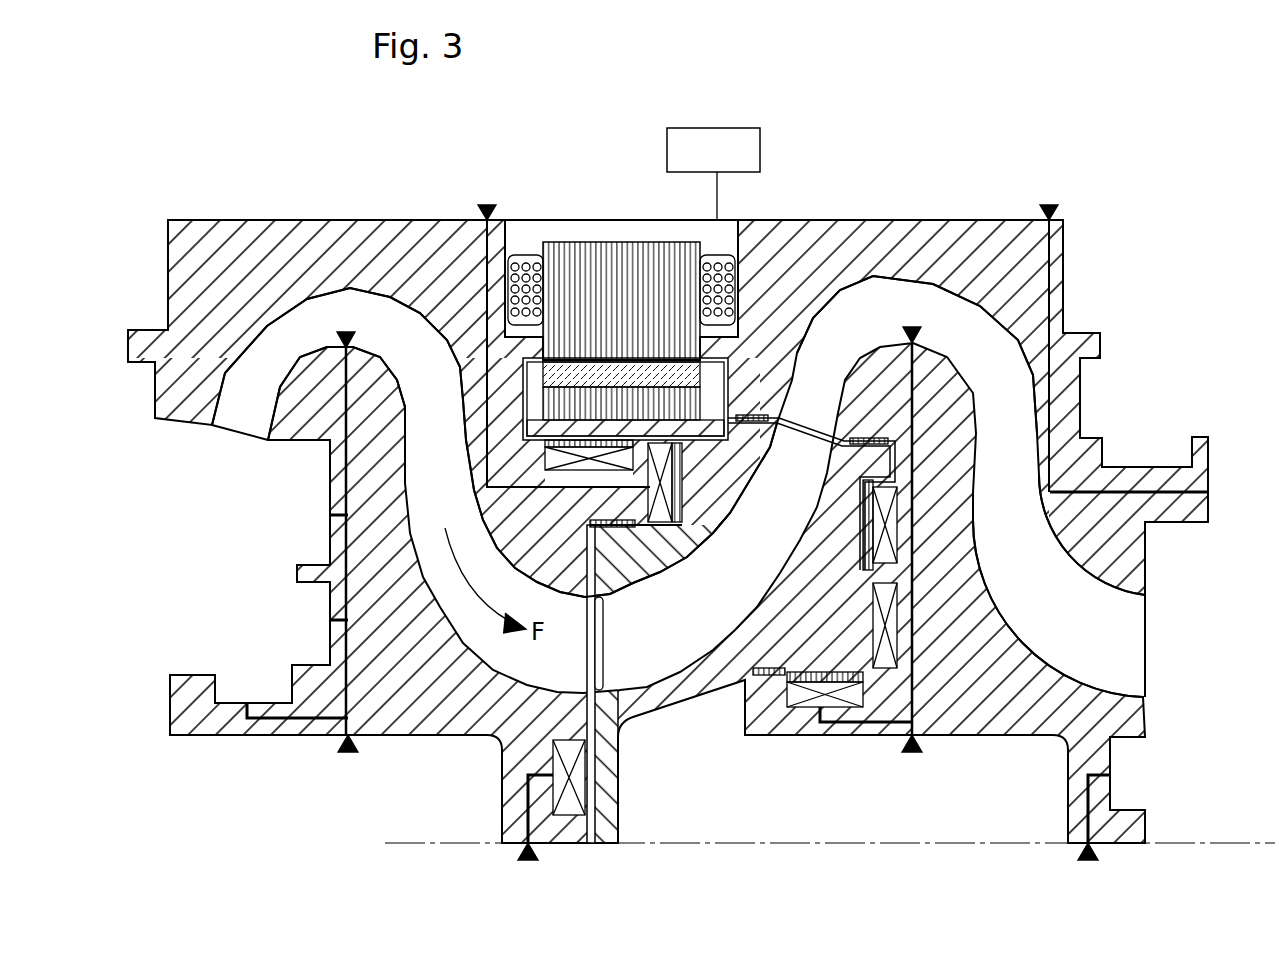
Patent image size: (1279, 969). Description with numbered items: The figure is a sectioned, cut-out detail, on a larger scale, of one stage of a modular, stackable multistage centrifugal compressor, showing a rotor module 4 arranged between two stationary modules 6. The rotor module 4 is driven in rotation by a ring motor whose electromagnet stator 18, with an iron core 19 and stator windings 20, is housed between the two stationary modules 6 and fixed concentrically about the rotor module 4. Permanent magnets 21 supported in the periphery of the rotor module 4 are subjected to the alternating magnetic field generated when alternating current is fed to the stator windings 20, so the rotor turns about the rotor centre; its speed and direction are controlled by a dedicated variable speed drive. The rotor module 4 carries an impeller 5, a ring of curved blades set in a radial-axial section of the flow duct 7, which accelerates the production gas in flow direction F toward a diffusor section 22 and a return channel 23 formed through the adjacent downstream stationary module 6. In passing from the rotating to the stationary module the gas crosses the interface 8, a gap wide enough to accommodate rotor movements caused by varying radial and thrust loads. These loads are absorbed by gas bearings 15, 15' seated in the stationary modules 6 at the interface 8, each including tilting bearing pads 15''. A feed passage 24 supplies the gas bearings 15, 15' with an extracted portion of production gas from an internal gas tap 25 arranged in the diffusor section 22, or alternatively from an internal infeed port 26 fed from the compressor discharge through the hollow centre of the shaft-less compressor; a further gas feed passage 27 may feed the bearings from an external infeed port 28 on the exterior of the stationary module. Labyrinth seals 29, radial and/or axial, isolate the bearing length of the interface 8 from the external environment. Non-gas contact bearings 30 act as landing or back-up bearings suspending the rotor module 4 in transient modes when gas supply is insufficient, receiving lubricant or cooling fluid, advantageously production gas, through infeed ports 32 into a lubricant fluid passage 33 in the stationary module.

The rotor module 4 is at (669, 716).
The impeller 5 is at (706, 604).
The stationary module 6 is at (312, 216).
The flow duct 7 is at (392, 490).
The interface 8 is at (812, 430).
The gas bearing 15 is at (642, 613).
The gas bearing 15' is at (833, 506).
The tilting bearing pads 15'' is at (724, 615).
The electromagnet stator 18 is at (573, 241).
The iron core 19 is at (605, 240).
The stator windings 20 is at (736, 260).
The permanent magnets 21 is at (560, 373).
The diffusor section 22 is at (276, 349).
The return channel 23 is at (1078, 644).
The feed passage 24 is at (330, 452).
The internal gas tap 25 is at (352, 336).
The internal infeed port 26 is at (344, 750).
The gas feed passage 27 is at (441, 228).
The external infeed port 28 is at (485, 207).
The labyrinth seals 29 is at (605, 520).
The non-gas bearing 30 is at (553, 757).
The infeed ports 32 is at (524, 860).
The lubricant fluid passage 33 is at (530, 805).